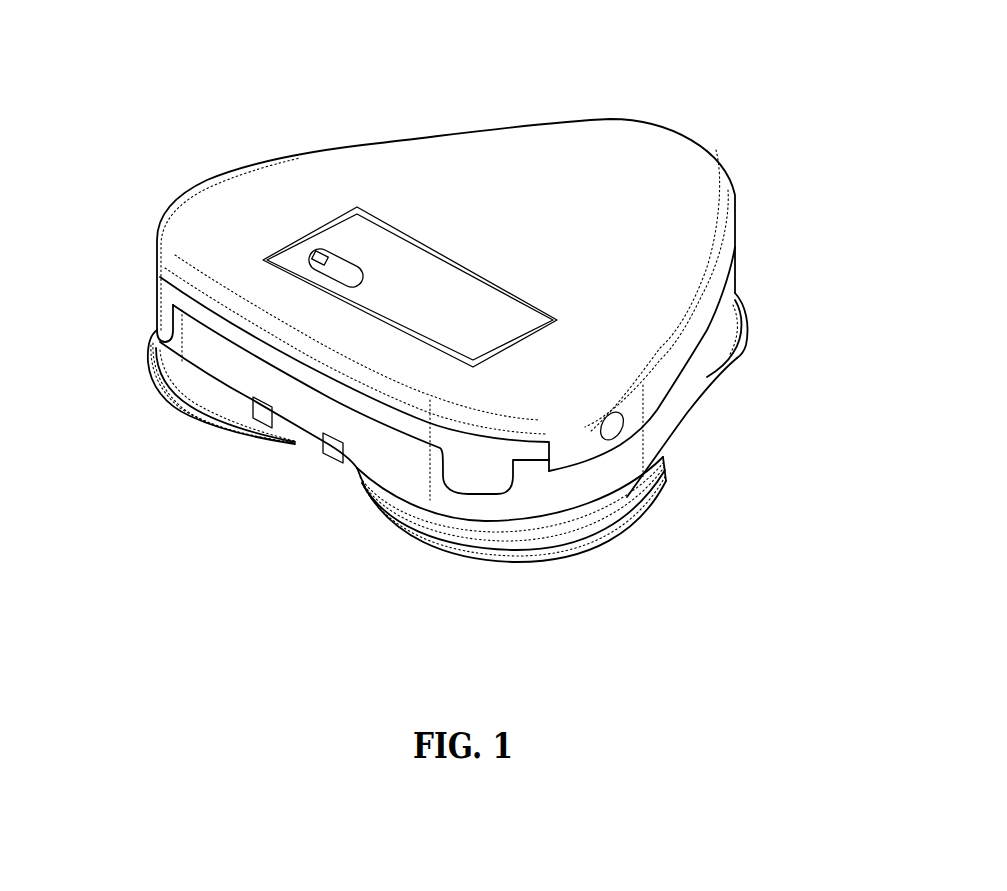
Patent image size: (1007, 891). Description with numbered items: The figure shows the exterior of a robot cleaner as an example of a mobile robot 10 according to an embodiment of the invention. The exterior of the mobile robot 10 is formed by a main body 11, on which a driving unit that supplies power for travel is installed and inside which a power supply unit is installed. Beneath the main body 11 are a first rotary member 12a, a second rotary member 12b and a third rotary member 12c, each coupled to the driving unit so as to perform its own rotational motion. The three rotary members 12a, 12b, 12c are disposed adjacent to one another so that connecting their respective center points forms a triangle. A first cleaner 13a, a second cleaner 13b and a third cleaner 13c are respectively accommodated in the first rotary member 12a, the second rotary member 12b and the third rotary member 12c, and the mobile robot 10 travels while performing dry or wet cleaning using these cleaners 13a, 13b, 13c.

The mobile robot 10 is at (92, 46).
The main body 11 is at (681, 153).
The first rotary member 12a is at (170, 372).
The second rotary member 12b is at (643, 506).
The third rotary member 12c is at (743, 321).
The first cleaner 13a is at (200, 417).
The second cleaner 13b is at (579, 550).
The third cleaner 13c is at (720, 358).